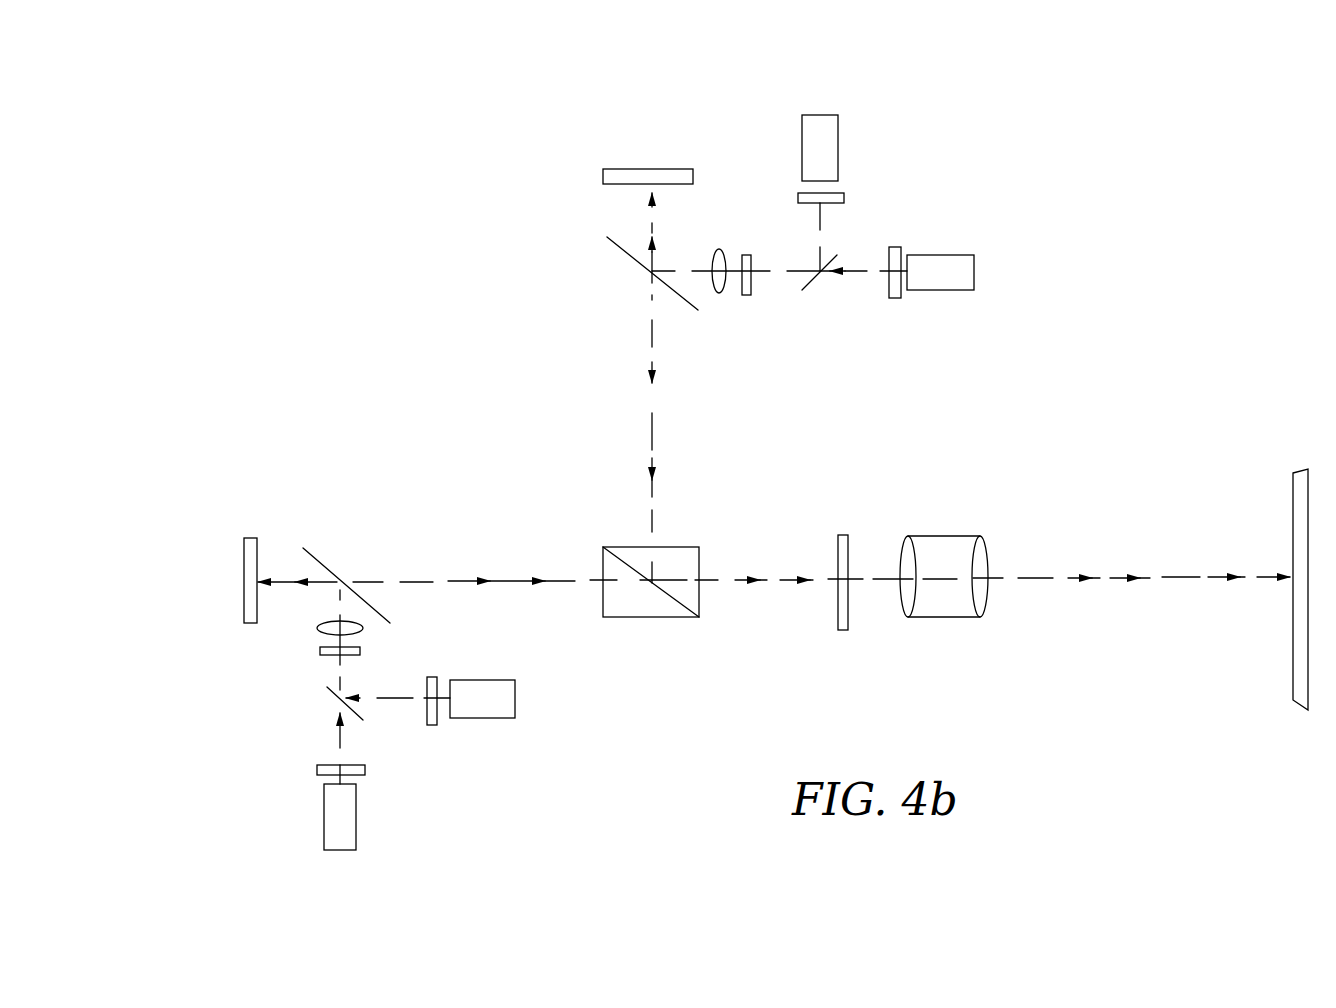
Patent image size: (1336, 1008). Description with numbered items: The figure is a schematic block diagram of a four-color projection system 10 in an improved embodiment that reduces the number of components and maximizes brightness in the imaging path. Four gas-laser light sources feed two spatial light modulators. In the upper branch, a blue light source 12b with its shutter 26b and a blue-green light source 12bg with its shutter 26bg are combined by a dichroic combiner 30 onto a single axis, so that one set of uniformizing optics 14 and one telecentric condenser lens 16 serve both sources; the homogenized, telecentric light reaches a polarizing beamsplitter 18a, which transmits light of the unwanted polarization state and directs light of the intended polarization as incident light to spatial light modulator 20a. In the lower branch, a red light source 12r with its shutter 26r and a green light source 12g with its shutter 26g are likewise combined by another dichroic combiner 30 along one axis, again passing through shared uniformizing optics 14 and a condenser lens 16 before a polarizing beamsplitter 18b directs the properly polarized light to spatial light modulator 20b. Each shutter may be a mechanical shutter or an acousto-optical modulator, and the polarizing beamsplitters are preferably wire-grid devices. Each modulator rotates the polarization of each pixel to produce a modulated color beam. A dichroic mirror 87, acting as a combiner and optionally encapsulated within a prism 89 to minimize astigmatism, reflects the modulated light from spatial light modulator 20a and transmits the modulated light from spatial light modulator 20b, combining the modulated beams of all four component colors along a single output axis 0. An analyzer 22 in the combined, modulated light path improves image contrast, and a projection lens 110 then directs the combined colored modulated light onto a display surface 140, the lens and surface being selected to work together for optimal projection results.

The projection system 10 is at (423, 282).
The spatial light modulator 20a is at (650, 169).
The blue light source 12b is at (820, 115).
The blue shutter 26b is at (844, 197).
The telecentric condenser lens 16 is at (717, 255).
The uniformizing optics 14 is at (747, 255).
The polarizing beamsplitter 18a is at (607, 237).
The dichroic combiner 30 is at (802, 290).
The blue-green shutter 26bg is at (895, 298).
The blue-green light source 12bg is at (933, 255).
The polarizing beamsplitter 18b is at (318, 562).
The spatial light modulator 20b is at (243, 595).
The red shutter 26r is at (317, 770).
The red light source 12r is at (323, 810).
The green shutter 26g is at (432, 725).
The green light source 12g is at (513, 715).
The dichroic mirror 87 is at (670, 593).
The prism 89 is at (668, 617).
The analyzer 22 is at (837, 540).
The projection lens 110 is at (938, 617).
The output axis 0 is at (1042, 577).
The display surface 140 is at (1293, 517).